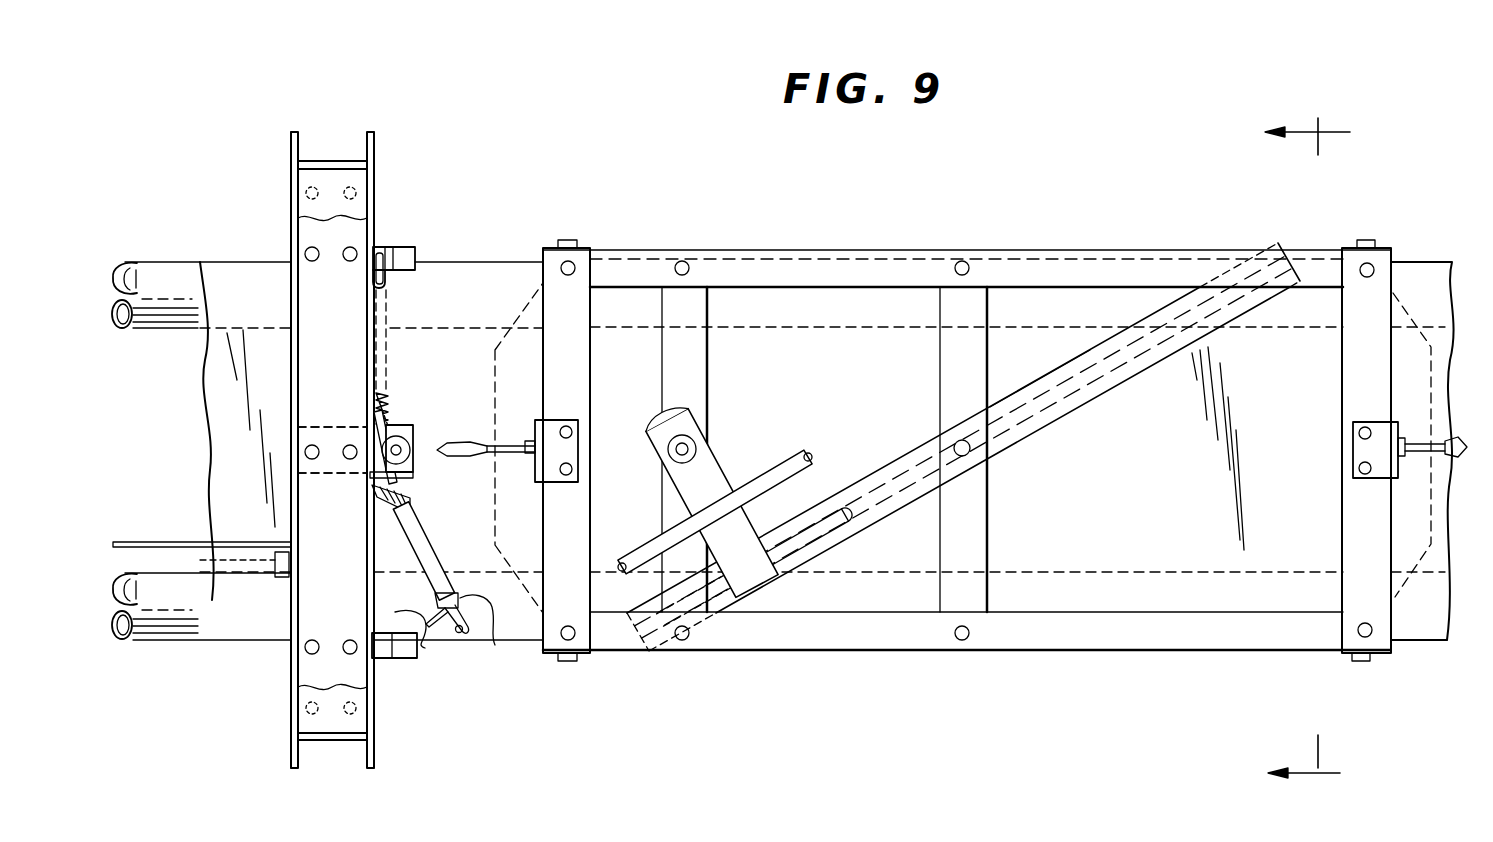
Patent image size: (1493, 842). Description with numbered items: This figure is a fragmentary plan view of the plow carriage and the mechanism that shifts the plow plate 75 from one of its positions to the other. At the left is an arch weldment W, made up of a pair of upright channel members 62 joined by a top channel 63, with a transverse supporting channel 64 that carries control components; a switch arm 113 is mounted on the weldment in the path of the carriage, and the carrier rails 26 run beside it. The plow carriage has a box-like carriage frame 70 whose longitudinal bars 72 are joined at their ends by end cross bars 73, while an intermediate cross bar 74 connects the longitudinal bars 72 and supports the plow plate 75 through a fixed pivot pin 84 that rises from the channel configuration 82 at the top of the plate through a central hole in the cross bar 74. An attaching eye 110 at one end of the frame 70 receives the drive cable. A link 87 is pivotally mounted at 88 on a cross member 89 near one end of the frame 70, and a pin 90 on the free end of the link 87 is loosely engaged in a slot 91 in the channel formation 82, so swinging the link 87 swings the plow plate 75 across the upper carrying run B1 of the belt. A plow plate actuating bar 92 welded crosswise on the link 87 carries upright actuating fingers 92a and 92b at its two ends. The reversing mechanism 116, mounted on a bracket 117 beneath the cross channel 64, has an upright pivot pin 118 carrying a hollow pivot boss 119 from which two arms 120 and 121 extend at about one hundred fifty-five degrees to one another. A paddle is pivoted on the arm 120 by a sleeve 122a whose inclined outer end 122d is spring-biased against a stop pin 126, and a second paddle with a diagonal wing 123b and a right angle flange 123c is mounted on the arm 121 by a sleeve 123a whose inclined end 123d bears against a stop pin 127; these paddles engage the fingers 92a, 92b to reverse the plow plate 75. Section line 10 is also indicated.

The upper carrying run of the belt B1 is at (215, 386).
The carrier rails 26 is at (165, 262).
The arch weldment W is at (385, 155).
The upright channel members 62 is at (330, 152).
The transverse supporting channel 64 is at (357, 228).
The top channel 63 is at (300, 718).
The plow plate reversing mechanism 116 is at (349, 427).
The arm 120 is at (390, 247).
The inclined outer end of paddle sleeve 122d is at (385, 290).
The stop pin 126 is at (388, 284).
The paddle sleeve 122a is at (388, 320).
The bracket 117 is at (399, 422).
The upright pivot pin 118 is at (420, 443).
The hollow pivot boss 119 is at (420, 462).
The diagonal wing 123b is at (380, 497).
The paddle sleeve 123a is at (457, 530).
The inclined outer end of paddle sleeve 123d is at (435, 598).
The right angle flange 123c is at (395, 612).
The arm 121 is at (455, 640).
The stop pin 127 is at (495, 644).
The switch arm 113 is at (178, 508).
The carriage frame 70 is at (817, 243).
The longitudinal bars 72 is at (952, 250).
The end cross bars 73 is at (590, 370).
The cross member 89 is at (702, 379).
The intermediate cross bar 74 is at (938, 371).
The fixed pivot pin 84 is at (963, 440).
The plow plate 75 is at (1078, 413).
The channel configuration 82 is at (1043, 385).
The slot 91 is at (855, 528).
The pin 90 is at (760, 577).
The link 87 is at (715, 472).
The pivot 88 is at (672, 457).
The plow plate actuating bar 92 is at (780, 462).
The upright actuating finger 92a is at (627, 562).
The upright actuating finger 92b is at (814, 456).
The attaching eye 110 is at (1443, 443).
The section line 10 is at (1307, 453).